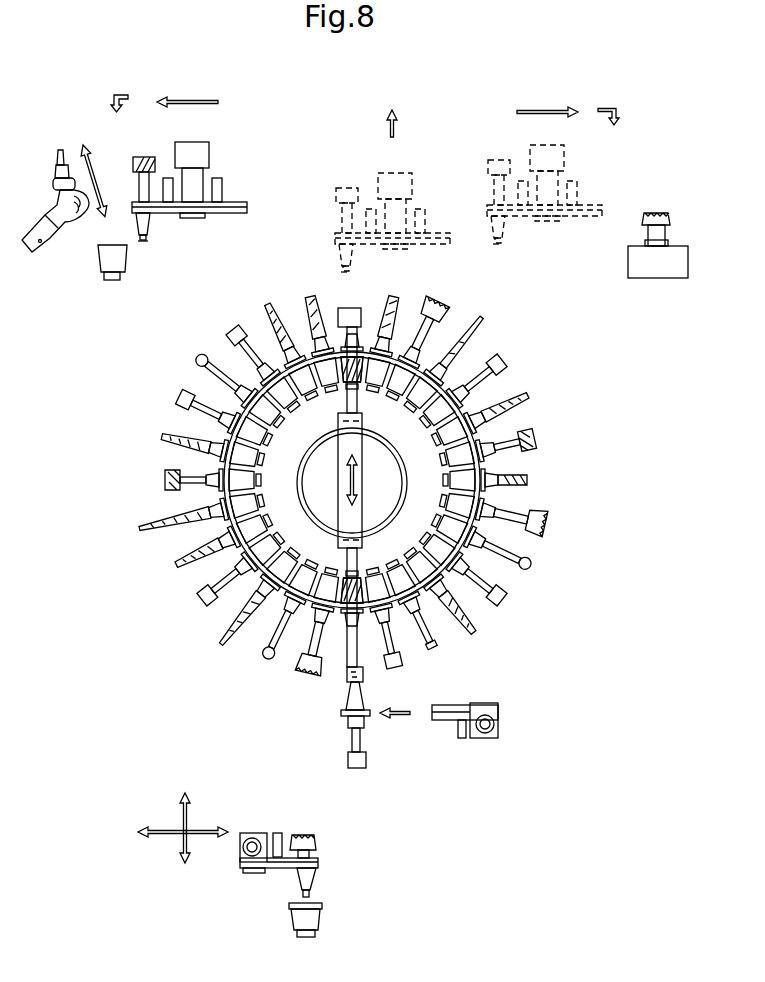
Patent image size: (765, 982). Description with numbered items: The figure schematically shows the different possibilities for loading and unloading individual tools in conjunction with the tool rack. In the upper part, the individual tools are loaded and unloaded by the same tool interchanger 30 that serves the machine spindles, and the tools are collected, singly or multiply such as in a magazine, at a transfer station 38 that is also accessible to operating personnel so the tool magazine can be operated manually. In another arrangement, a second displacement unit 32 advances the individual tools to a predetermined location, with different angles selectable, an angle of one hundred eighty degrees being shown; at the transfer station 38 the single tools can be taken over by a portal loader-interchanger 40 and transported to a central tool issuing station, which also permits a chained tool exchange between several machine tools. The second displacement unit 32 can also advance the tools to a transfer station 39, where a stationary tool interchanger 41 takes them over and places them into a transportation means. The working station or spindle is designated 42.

The tool interchanger 30 is at (232, 167).
The second displacement unit 32 is at (360, 521).
The transfer station 38 is at (99, 283).
The transfer station 39 is at (318, 753).
The portal loader-interchanger 40 is at (514, 728).
The stationary tool interchanger 41 is at (335, 887).
The working station 42 is at (680, 228).